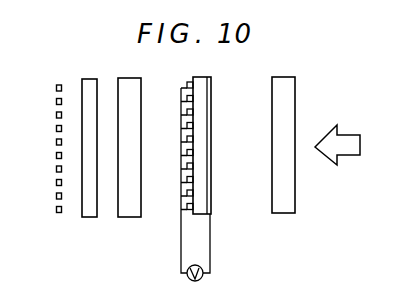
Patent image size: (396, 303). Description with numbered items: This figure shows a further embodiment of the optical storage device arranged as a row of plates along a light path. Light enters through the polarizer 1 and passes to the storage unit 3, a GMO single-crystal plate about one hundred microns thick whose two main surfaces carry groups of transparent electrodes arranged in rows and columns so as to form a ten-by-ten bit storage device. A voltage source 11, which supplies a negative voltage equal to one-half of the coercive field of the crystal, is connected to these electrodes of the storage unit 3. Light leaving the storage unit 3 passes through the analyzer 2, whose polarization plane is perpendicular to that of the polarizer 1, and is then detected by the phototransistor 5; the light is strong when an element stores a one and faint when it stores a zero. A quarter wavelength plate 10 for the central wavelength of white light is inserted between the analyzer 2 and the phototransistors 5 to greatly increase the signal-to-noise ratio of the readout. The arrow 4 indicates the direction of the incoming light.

The polarizer 1 is at (285, 80).
The analyzer 2 is at (131, 78).
The storage unit 3 is at (202, 80).
The arrow indicating particle flow direction 4 is at (352, 133).
The phototransistor 5 is at (55, 182).
The quarter wavelength plate 10 is at (86, 79).
The voltage source 11 is at (200, 280).